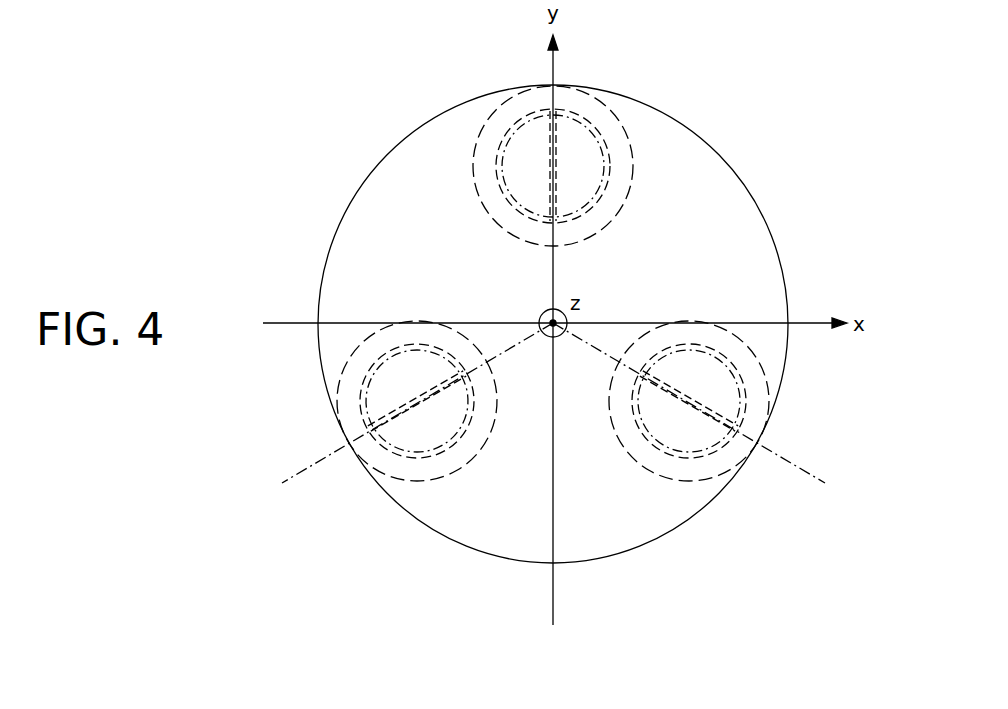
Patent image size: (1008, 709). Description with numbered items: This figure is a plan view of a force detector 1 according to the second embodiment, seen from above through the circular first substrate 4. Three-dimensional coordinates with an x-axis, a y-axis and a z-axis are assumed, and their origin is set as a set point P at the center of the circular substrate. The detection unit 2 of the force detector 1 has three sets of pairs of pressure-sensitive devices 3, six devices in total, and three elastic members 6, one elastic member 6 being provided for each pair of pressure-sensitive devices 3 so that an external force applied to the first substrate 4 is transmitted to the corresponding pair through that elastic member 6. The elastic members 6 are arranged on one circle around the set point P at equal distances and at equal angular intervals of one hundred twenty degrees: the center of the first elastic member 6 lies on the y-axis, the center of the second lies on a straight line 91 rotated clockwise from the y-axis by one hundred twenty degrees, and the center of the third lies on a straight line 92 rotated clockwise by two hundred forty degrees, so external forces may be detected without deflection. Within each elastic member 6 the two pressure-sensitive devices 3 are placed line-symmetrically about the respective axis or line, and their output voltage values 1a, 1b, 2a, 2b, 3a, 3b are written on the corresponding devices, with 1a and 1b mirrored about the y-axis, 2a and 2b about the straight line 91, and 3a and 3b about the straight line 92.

The force detector 1 is at (835, 55).
The detection unit 2 is at (733, 118).
The first substrate 4 is at (713, 190).
The pressure-sensitive device 3 is at (510, 133).
The elastic member 6 is at (617, 120).
The straight line 91 is at (780, 453).
The straight line 92 is at (323, 456).
The set point P is at (540, 314).
The output value of pressure-sensitive device 1A 1a is at (581, 165).
The output value of pressure-sensitive device 1B 1b is at (525, 165).
The output value of pressure-sensitive device 2A 2a is at (675, 427).
The output value of pressure-sensitive device 2B 2b is at (700, 372).
The output value of pressure-sensitive device 3A 3a is at (405, 372).
The output value of pressure-sensitive device 3B 3b is at (435, 427).